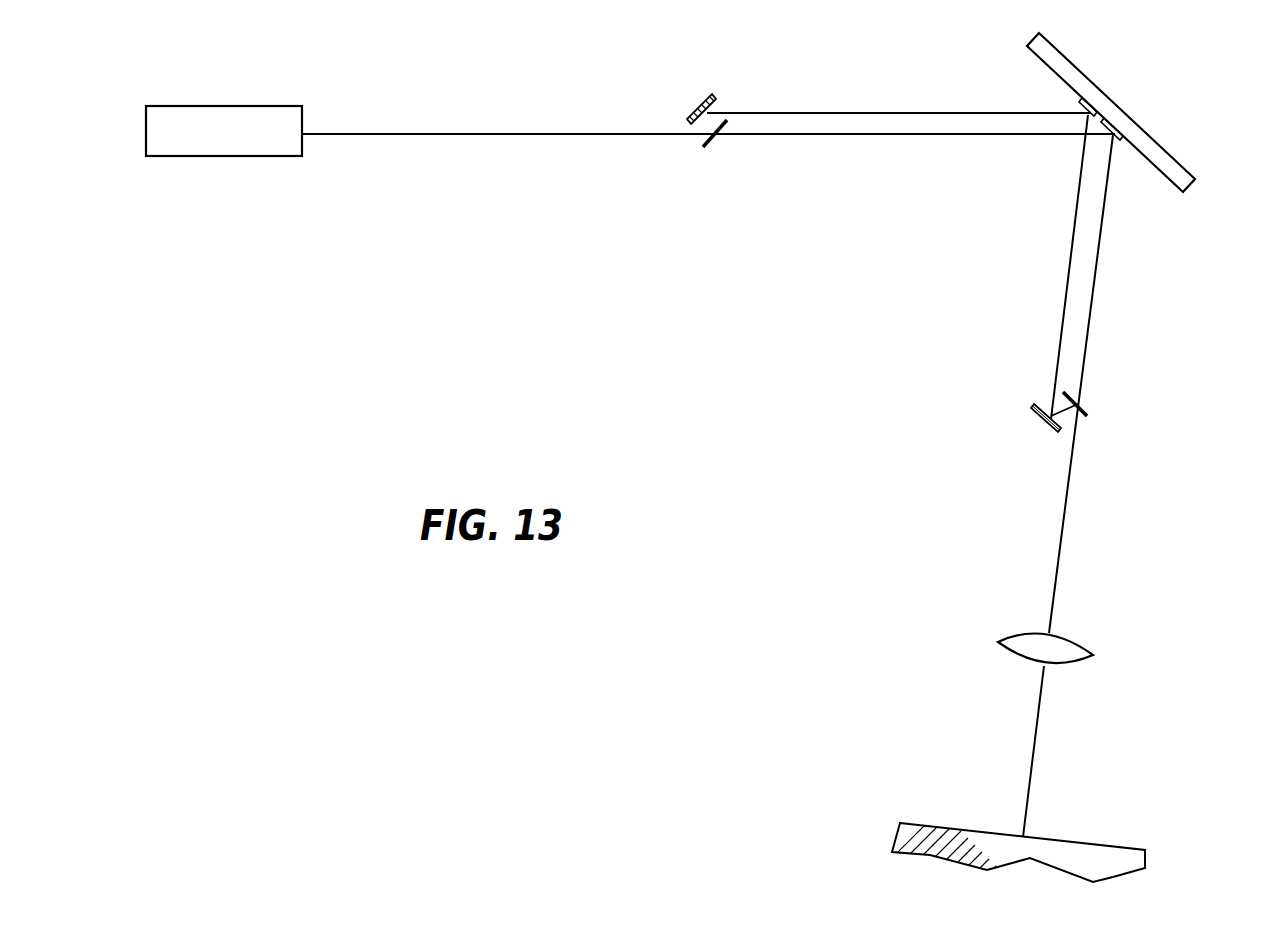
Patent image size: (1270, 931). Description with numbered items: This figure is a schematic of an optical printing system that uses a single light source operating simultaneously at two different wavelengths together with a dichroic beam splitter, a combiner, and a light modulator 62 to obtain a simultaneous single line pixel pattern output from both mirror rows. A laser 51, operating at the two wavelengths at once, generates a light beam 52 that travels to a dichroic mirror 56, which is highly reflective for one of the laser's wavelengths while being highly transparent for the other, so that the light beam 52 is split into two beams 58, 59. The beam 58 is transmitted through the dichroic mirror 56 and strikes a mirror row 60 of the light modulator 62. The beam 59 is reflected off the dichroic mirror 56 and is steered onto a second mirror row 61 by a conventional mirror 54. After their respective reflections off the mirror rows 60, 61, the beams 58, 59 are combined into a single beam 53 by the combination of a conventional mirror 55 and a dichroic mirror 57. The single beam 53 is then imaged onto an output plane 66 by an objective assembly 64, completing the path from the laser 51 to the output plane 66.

The laser 51 is at (224, 158).
The light beam 52 is at (488, 136).
The single beam 53 is at (1060, 557).
The conventional mirror 54 is at (712, 92).
The conventional mirror 55 is at (1037, 407).
The dichroic mirror 56 is at (716, 140).
The dichroic mirror 57 is at (1086, 404).
The beam 58 is at (845, 137).
The beam 59 is at (845, 112).
The mirror row 60 is at (1120, 138).
The mirror row 61 is at (1078, 106).
The light modulator 62 is at (1132, 90).
The objective assembly 64 is at (970, 638).
The output plane 66 is at (1112, 843).